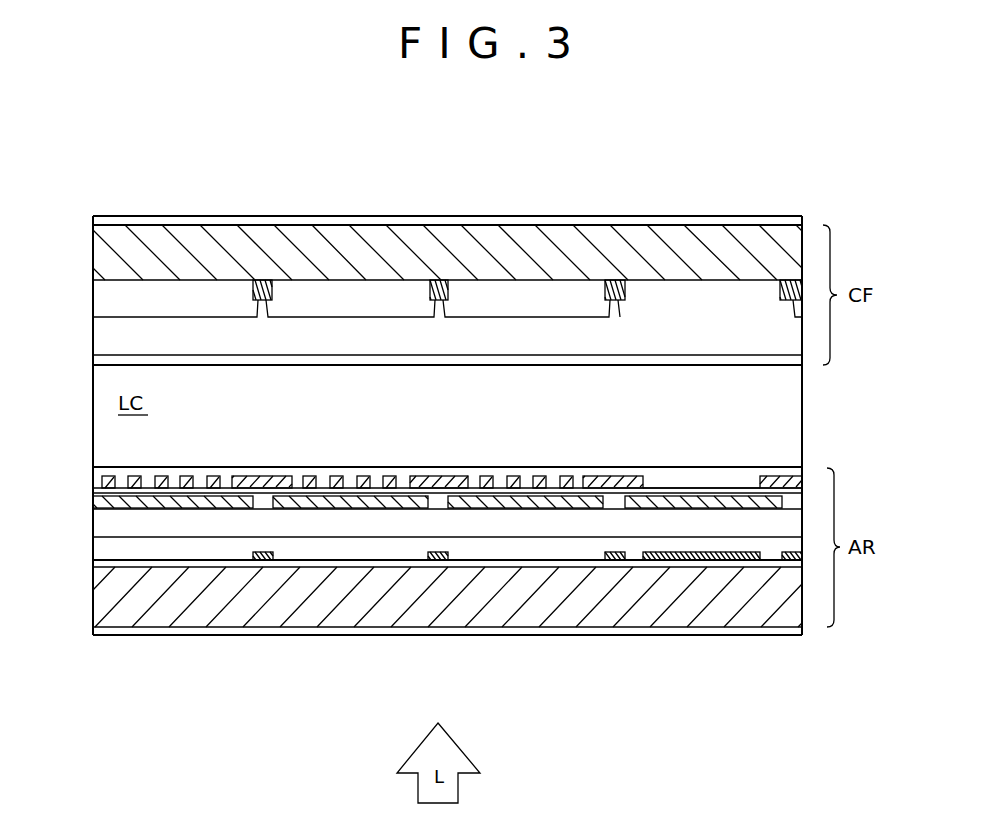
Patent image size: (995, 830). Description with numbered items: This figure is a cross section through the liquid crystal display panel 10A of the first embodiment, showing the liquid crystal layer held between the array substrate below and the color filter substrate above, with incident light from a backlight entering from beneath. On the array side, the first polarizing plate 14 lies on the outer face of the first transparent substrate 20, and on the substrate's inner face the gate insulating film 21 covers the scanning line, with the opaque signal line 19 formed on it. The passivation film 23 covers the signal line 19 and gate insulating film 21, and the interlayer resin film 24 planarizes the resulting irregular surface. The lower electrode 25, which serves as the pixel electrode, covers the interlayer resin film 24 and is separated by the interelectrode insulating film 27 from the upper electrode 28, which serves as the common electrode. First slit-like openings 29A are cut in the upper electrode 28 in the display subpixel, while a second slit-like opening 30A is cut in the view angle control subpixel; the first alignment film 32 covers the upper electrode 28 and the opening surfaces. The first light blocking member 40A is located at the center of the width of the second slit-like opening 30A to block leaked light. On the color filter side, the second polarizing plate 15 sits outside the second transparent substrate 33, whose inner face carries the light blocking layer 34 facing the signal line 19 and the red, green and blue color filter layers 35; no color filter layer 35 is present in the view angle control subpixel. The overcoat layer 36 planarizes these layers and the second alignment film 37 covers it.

The liquid crystal display panel 10A is at (168, 150).
The second polarizing plate 15 is at (265, 222).
The second transparent substrate 33 is at (335, 258).
The light blocking layer 34 is at (622, 282).
The color filter layer 35 is at (535, 288).
The overcoat layer 36 is at (695, 318).
The second alignment film 37 is at (738, 362).
The first alignment film 32 is at (727, 470).
The upper electrode 28 is at (490, 480).
The first slit-like opening 29A is at (553, 482).
The second slit-like opening 30A is at (672, 483).
The interelectrode insulating film 27 is at (373, 490).
The lower electrode 25 is at (322, 502).
The interlayer resin film 24 is at (505, 523).
The passivation film 23 is at (377, 545).
The signal line 19 is at (262, 560).
The first light blocking member 40A is at (703, 560).
The gate insulating film 21 is at (315, 567).
The first transparent substrate 20 is at (205, 600).
The first polarizing plate 14 is at (150, 632).